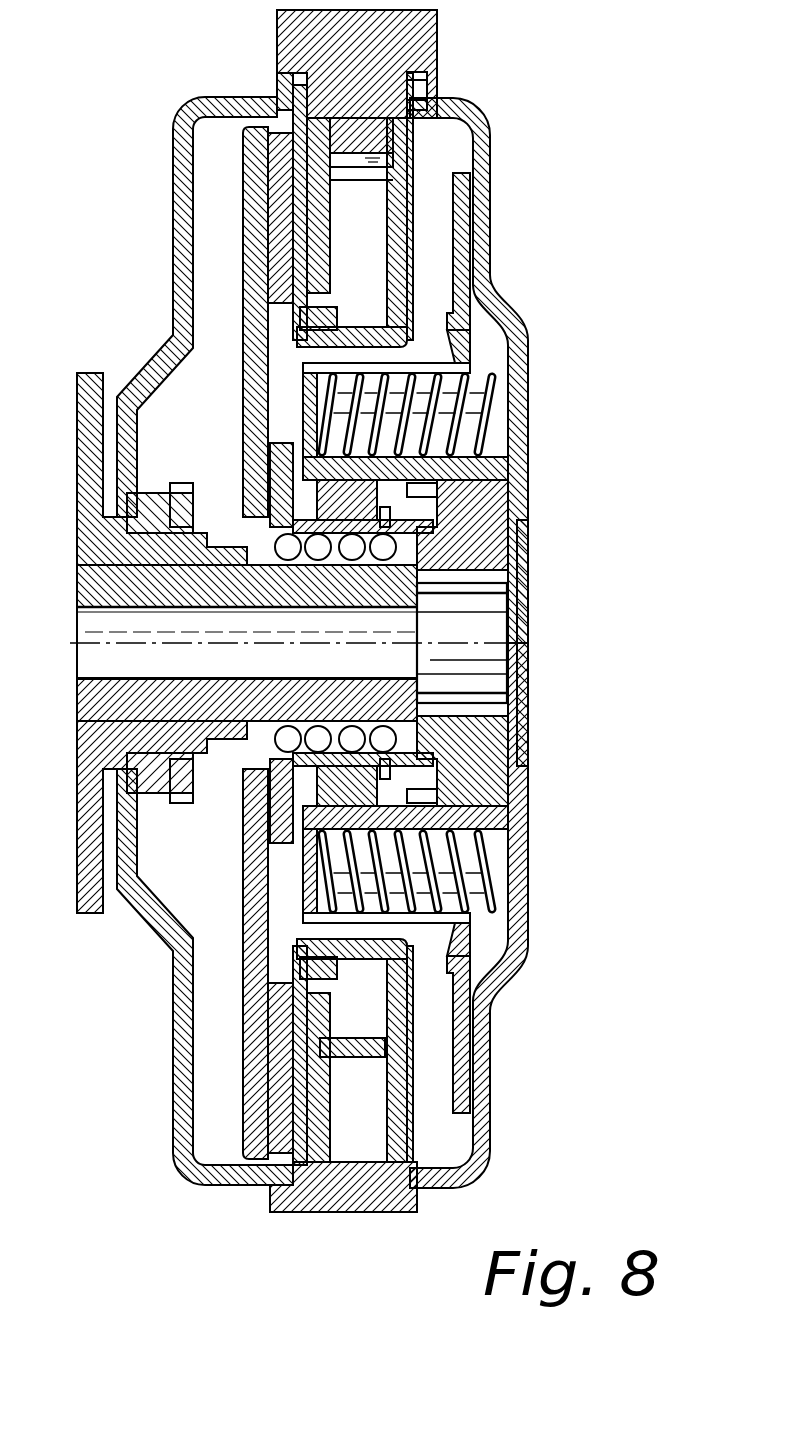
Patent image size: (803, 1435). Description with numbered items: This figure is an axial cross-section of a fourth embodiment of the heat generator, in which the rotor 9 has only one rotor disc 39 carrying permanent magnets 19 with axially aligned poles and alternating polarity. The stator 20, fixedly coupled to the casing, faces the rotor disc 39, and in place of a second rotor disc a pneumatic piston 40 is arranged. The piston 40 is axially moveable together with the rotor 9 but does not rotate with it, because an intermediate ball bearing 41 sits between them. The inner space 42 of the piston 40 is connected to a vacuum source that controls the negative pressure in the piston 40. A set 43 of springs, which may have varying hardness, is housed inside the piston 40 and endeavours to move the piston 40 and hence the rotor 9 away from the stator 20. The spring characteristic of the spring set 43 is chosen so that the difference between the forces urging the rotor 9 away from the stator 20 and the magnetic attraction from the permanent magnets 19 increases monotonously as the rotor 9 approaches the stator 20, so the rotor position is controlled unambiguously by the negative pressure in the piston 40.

The rotor 9 is at (244, 143).
The permanent magnets 19 is at (290, 157).
The stator 20 is at (365, 128).
The rotor disc 39 is at (248, 244).
The pneumatic piston 40 is at (535, 463).
The ball bearing 41 is at (347, 780).
The inner space 42 is at (448, 400).
The set of springs 43 is at (505, 423).